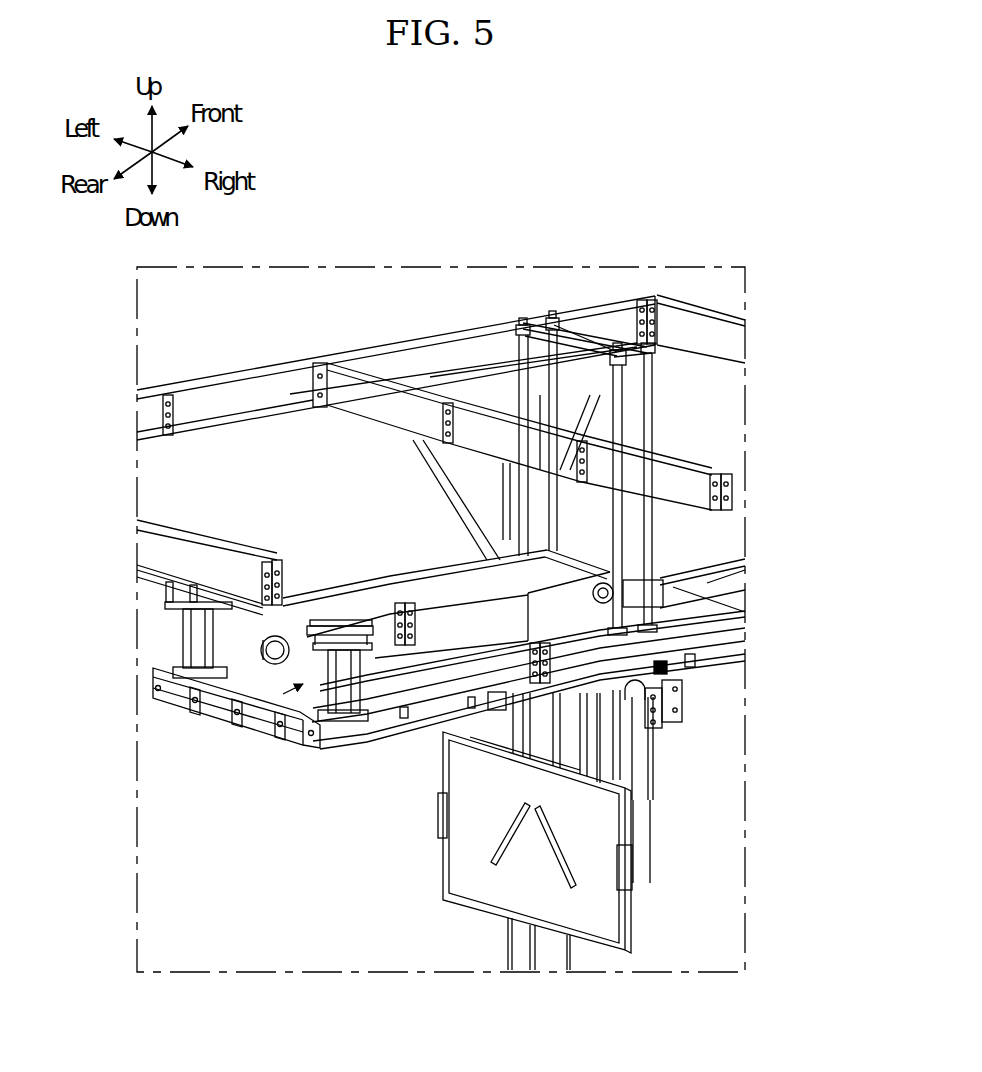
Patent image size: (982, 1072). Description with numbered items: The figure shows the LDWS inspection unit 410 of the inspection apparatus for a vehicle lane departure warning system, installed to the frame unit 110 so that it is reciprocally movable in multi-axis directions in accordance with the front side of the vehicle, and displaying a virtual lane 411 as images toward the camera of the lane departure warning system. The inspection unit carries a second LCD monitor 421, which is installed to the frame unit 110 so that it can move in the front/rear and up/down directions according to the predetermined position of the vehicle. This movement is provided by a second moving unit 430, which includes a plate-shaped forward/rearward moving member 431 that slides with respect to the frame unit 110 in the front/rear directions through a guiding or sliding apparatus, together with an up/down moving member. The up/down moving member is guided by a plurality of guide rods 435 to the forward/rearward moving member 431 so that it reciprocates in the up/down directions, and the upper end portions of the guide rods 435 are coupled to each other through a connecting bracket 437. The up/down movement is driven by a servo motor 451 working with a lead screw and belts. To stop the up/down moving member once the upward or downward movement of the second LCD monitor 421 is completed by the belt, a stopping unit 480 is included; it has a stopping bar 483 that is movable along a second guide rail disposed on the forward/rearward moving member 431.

The LDWS inspection unit 410 is at (458, 158).
The frame unit 110 is at (167, 558).
The stopping bar 483 is at (545, 453).
The connecting bracket 437 is at (582, 342).
The guide rods 435 is at (527, 393).
The stopping unit 480 is at (740, 610).
The servo motor 451 is at (190, 710).
The second moving unit 430 is at (220, 718).
The forward/rearward moving member 431 is at (305, 748).
The second LCD monitor 421 is at (443, 862).
The virtual lane 411 is at (513, 840).